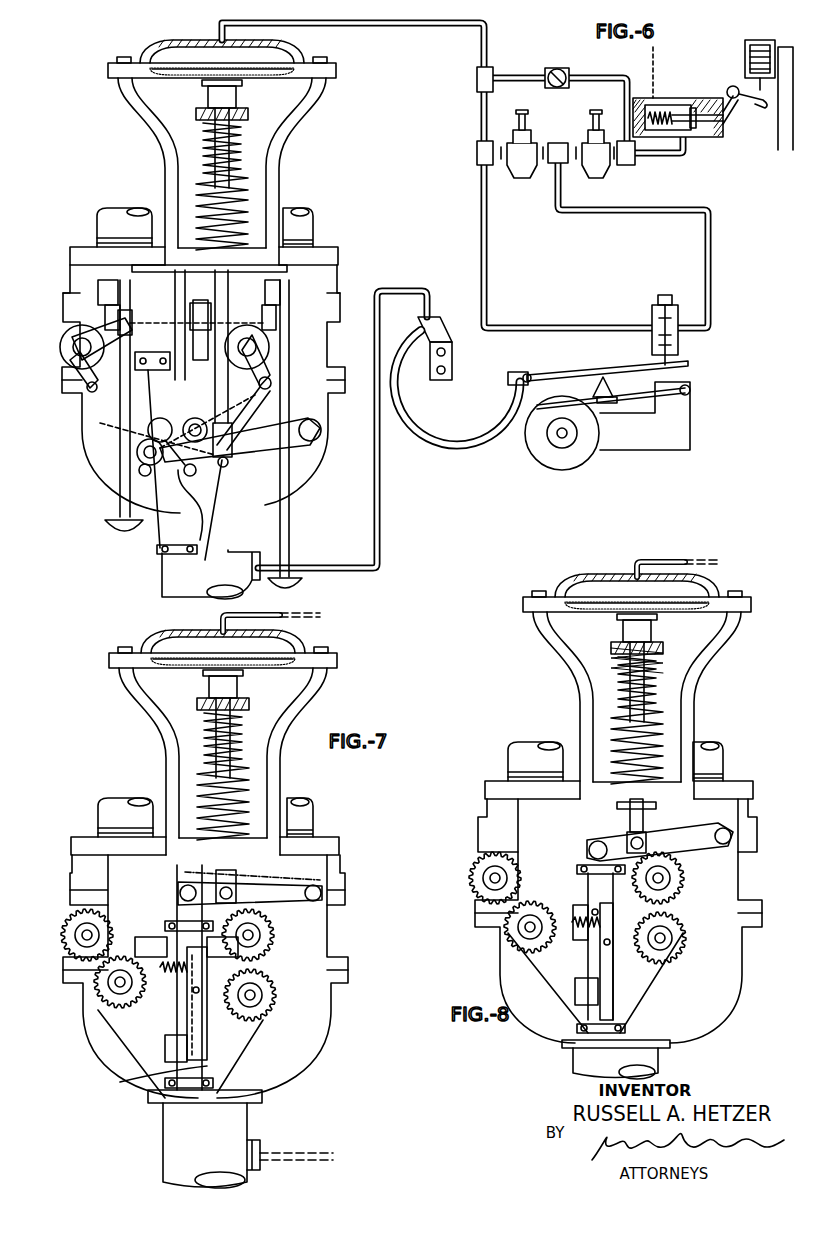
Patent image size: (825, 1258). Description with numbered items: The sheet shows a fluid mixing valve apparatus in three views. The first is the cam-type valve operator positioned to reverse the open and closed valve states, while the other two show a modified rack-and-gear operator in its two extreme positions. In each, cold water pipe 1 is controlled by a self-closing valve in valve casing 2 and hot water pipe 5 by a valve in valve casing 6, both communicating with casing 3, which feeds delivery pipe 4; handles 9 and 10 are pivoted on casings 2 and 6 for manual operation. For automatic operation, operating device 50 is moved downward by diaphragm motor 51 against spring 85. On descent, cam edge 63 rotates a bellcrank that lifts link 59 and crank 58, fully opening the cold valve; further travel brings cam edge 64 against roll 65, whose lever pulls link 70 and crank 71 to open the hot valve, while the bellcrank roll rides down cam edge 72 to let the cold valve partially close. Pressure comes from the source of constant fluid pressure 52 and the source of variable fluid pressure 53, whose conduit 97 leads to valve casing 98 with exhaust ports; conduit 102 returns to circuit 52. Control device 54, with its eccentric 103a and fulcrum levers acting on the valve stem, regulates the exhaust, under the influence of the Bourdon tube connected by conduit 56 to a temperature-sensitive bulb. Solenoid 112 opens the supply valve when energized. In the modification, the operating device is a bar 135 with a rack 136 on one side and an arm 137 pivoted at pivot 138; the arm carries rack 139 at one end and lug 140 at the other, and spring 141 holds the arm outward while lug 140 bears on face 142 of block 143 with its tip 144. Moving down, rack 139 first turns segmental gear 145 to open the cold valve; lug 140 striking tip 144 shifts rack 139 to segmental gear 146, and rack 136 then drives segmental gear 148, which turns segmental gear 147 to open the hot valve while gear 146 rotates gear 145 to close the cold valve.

In FIG. 6, the cold water pipe 1 is at (312, 218).
In FIG. 7, the cold water pipe 1 is at (312, 808).
In FIG. 8, the cold water pipe 1 is at (712, 745).
In FIG. 6, the valve casing 2 is at (322, 330).
In FIG. 7, the valve casing 2 is at (333, 912).
In FIG. 8, the valve casing 2 is at (737, 887).
In FIG. 7, the casing 3 is at (310, 1040).
In FIG. 8, the casing 3 is at (692, 1017).
In FIG. 7, the delivery pipe 4 is at (163, 1140).
In FIG. 8, the delivery pipe 4 is at (580, 1063).
In FIG. 6, the hot water pipe 5 is at (128, 212).
In FIG. 7, the hot water pipe 5 is at (125, 805).
In FIG. 8, the hot water pipe 5 is at (535, 745).
In FIG. 6, the valve casing 6 is at (92, 322).
In FIG. 7, the valve casing 6 is at (88, 908).
In FIG. 6, the handle 9 is at (292, 527).
In FIG. 6, the handle 10 is at (115, 515).
In FIG. 6, the operating device 50 is at (180, 505).
In FIG. 7, the diaphragm motor 51 is at (307, 640).
In FIG. 6, the source of constant fluid pressure 52 is at (559, 140).
In FIG. 6, the source of variable fluid pressure 53 is at (631, 297).
In FIG. 6, the control device 54 is at (697, 450).
In FIG. 6, the conduit 56 is at (381, 527).
In FIG. 6, the crank 58 is at (262, 368).
In FIG. 6, the link 59 is at (255, 405).
In FIG. 6, the cam edge 63 is at (200, 510).
In FIG. 6, the cam edge 64 is at (148, 478).
In FIG. 6, the roll 65 is at (140, 470).
In FIG. 6, the link 70 is at (112, 392).
In FIG. 6, the crank 71 is at (85, 375).
In FIG. 6, the cam edge 72 is at (195, 426).
In FIG. 8, the spring 85 is at (612, 667).
In FIG. 6, the conduit 97 is at (710, 270).
In FIG. 6, the valve casing 98 is at (680, 348).
In FIG. 6, the conduit 102 is at (408, 25).
In FIG. 8, the conduit 102 is at (664, 561).
In FIG. 6, the eccentric 103a is at (540, 462).
In FIG. 6, the solenoid 112 is at (745, 52).
In FIG. 7, the bar 135 is at (182, 910).
In FIG. 8, the bar 135 is at (593, 886).
In FIG. 7, the rack 136 is at (150, 952).
In FIG. 7, the arm 137 is at (207, 1012).
In FIG. 7, the pivot 138 is at (193, 992).
In FIG. 7, the rack 139 is at (232, 1018).
In FIG. 7, the lug 140 is at (208, 1070).
In FIG. 7, the spring 141 is at (175, 972).
In FIG. 7, the face 142 is at (206, 1050).
In FIG. 7, the block 143 is at (166, 1048).
In FIG. 7, the tip 144 is at (140, 1082).
In FIG. 7, the segmental gear 145 is at (272, 940).
In FIG. 8, the segmental gear 145 is at (680, 890).
In FIG. 7, the segmental gear 146 is at (270, 995).
In FIG. 8, the segmental gear 146 is at (647, 943).
In FIG. 7, the segmental gear 147 is at (70, 950).
In FIG. 8, the segmental gear 147 is at (498, 898).
In FIG. 7, the segmental gear 148 is at (95, 990).
In FIG. 8, the segmental gear 148 is at (547, 937).